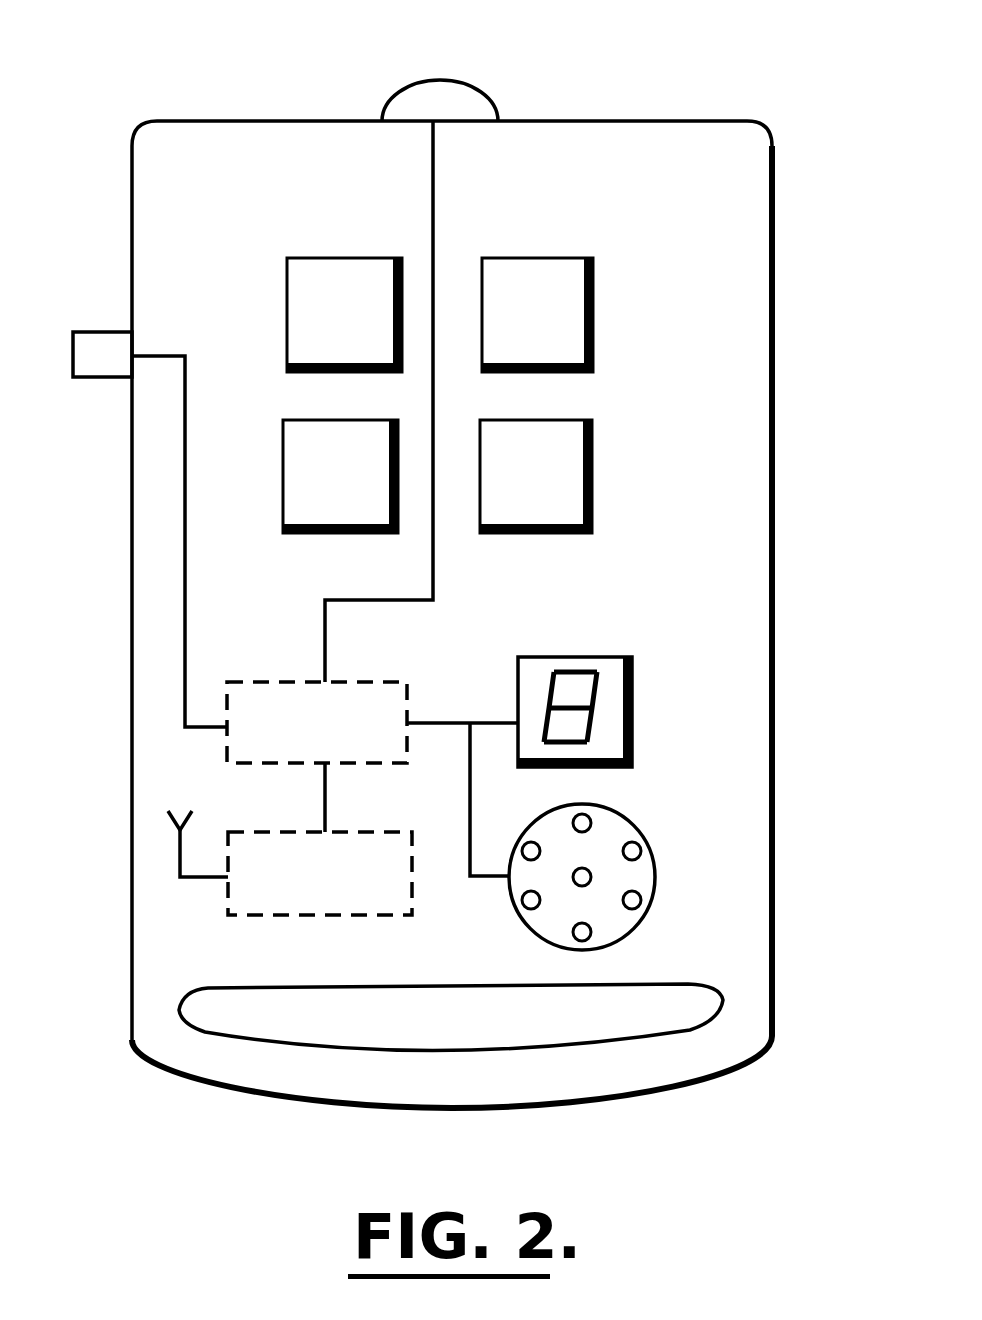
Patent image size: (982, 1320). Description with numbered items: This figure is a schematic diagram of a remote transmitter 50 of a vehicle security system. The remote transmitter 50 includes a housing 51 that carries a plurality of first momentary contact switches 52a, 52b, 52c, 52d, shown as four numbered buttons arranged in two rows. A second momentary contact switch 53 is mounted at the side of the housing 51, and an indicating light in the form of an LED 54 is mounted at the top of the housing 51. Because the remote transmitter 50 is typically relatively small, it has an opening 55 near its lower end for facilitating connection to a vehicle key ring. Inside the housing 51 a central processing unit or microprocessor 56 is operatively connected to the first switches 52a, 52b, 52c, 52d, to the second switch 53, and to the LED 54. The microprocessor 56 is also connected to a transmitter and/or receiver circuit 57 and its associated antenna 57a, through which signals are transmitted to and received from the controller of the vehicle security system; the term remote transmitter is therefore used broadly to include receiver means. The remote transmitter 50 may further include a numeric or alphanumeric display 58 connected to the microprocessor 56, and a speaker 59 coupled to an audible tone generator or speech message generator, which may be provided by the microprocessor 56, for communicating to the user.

The remote transmitter 50 is at (447, 562).
The housing 51 is at (479, 614).
The first momentary contact switch 52a is at (346, 300).
The first momentary contact switch 52b is at (541, 300).
The first momentary contact switch 52c is at (342, 460).
The first momentary contact switch 52d is at (538, 460).
The second momentary contact switch 53 is at (101, 331).
The LED 54 is at (461, 86).
The opening 55 is at (454, 1006).
The microprocessor 56 is at (339, 709).
The transmitter and/or receiver circuit 57 is at (320, 858).
The antenna 57a is at (189, 878).
The display 58 is at (575, 695).
The speaker 59 is at (597, 877).